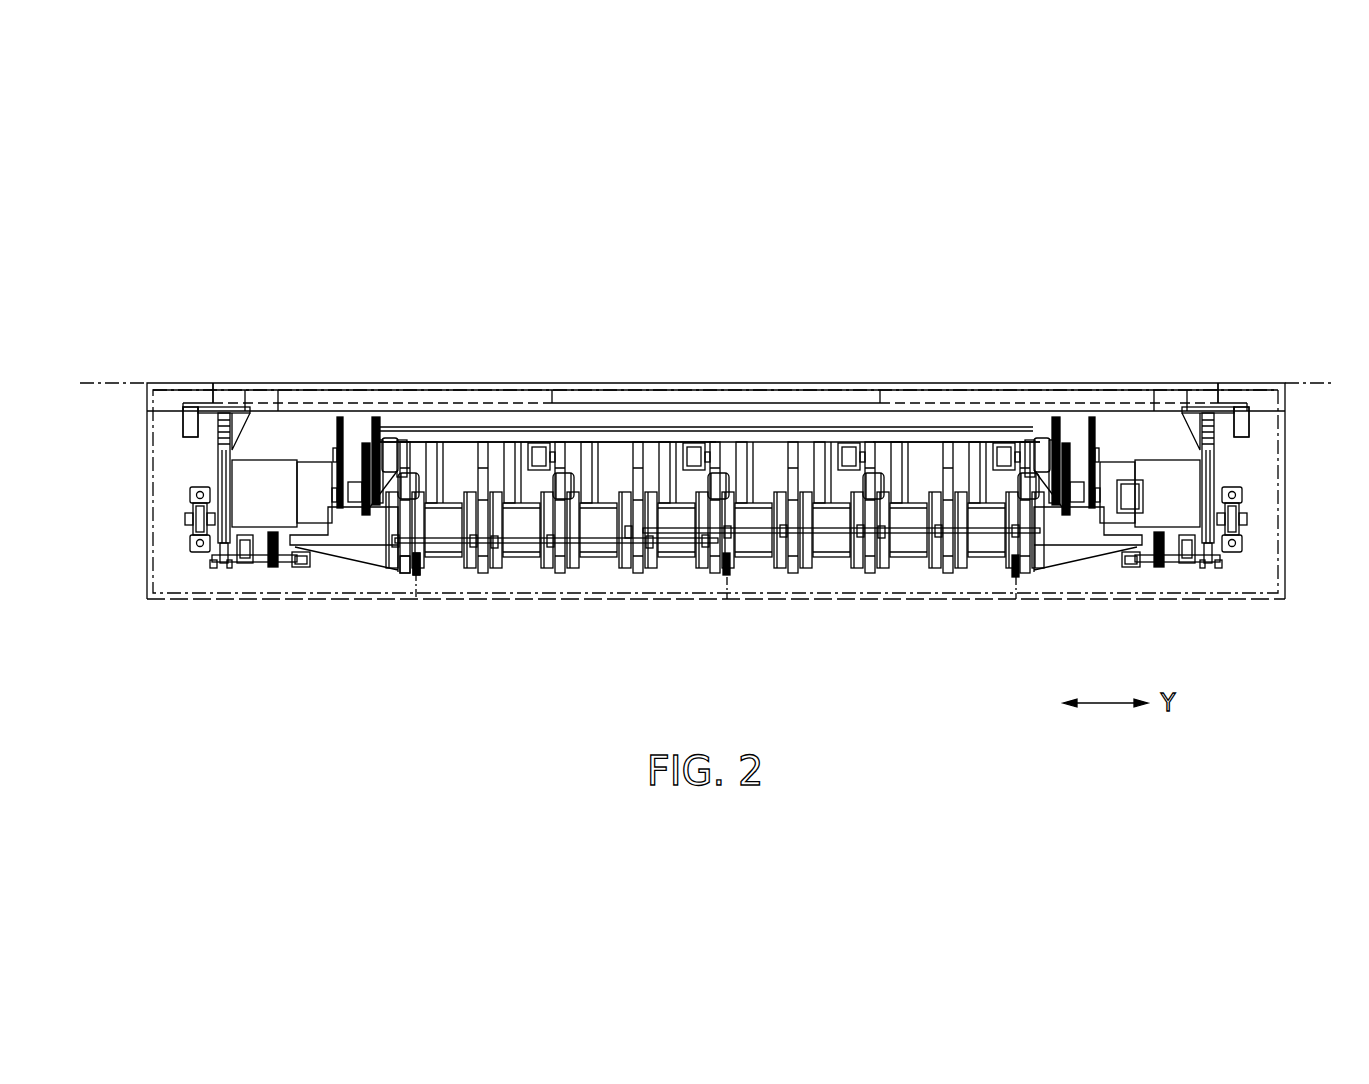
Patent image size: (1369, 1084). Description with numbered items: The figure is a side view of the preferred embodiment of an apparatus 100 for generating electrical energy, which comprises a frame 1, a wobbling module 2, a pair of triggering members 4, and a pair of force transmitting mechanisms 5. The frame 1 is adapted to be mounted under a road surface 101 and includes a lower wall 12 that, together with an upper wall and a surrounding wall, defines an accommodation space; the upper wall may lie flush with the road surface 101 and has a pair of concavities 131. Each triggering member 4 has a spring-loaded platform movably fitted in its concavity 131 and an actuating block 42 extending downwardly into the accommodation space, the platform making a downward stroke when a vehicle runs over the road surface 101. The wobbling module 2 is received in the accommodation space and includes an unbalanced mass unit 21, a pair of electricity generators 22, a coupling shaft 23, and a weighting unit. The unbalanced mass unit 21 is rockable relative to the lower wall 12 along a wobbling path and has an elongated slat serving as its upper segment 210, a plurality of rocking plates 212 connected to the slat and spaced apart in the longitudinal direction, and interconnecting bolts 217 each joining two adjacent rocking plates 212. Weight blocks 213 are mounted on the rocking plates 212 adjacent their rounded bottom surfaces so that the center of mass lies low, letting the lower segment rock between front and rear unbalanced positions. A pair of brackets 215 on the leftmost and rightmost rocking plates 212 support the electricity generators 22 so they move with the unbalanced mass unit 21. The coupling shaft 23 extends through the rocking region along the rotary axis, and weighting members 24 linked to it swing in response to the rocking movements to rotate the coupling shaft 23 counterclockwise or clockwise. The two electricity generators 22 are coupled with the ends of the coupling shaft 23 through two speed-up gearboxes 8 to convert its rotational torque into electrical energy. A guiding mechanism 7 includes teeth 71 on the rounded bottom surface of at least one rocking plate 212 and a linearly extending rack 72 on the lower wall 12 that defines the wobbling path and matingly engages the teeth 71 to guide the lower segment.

The frame 1 is at (1259, 600).
The lower wall 12 is at (1188, 600).
The apparatus for generating electrical energy 100 is at (1026, 330).
The road surface 101 is at (1322, 380).
The wobbling module 2 is at (778, 426).
The unbalanced mass unit 21 is at (882, 447).
The upper segment 210 is at (937, 437).
The electricity generator 22 is at (318, 477).
The coupling shaft 23 is at (615, 445).
The weighting member 24 is at (748, 548).
The rocking plate 212 is at (560, 570).
The weight block 213 is at (547, 570).
The bracket 215 is at (345, 548).
The interconnecting bolt 217 is at (908, 542).
The triggering member 4 is at (416, 384).
The actuating block 42 is at (266, 397).
The force transmitting mechanism 5 is at (210, 468).
The guiding mechanism 7 is at (432, 583).
The teeth 71 is at (405, 572).
The linearly extending rack 72 is at (418, 590).
The speed-up gearbox 8 is at (343, 410).
The concavity 131 is at (222, 397).